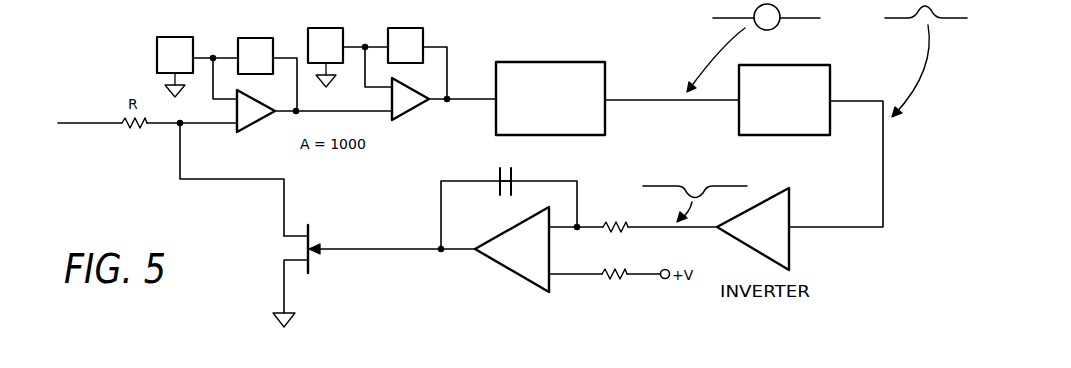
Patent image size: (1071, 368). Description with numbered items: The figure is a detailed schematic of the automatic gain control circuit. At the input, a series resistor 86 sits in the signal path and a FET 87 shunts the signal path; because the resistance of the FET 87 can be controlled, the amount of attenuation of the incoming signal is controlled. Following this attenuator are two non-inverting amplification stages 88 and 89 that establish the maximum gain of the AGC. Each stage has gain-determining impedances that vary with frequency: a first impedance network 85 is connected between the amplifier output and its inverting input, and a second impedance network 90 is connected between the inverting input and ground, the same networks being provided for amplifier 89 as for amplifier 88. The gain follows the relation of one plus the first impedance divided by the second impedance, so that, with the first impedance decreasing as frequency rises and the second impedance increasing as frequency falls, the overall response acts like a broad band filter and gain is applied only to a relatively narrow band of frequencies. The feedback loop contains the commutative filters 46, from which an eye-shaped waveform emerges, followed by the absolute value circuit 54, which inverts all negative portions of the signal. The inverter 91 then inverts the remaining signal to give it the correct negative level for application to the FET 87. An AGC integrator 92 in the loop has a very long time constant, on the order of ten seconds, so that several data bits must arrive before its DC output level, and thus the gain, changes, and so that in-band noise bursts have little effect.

The commutative filters 46 is at (558, 62).
The absolute value circuit 54 is at (817, 65).
The Z1 impedance network 85 is at (250, 38).
The series resistor 86 is at (128, 132).
The FET 87 is at (313, 230).
The amplifier stage 88 is at (250, 128).
The amplifier stage 89 is at (410, 108).
The Z2 impedance network 90 is at (156, 50).
The inverter 91 is at (790, 192).
The AGC integrator 92 is at (497, 273).